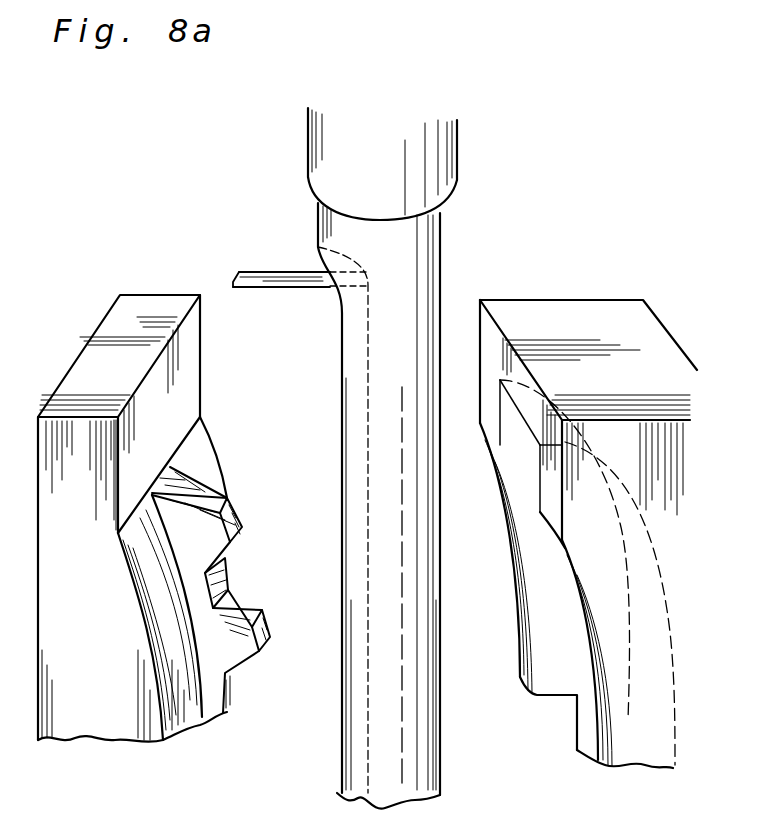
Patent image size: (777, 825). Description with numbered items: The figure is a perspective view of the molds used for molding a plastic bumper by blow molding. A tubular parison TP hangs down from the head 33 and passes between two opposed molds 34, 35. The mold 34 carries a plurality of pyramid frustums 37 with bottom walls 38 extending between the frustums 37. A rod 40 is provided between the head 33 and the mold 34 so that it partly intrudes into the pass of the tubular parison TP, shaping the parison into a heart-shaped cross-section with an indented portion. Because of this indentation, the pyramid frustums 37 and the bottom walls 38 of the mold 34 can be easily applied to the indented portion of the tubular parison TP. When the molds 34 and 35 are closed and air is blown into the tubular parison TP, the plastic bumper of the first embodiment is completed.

The head 33 is at (440, 147).
The tubular parison TP is at (420, 262).
The mold 34 is at (107, 313).
The mold 35 is at (615, 313).
The pyramid frustums 37 is at (232, 516).
The bottom walls 38 is at (222, 583).
The rod 40 is at (266, 273).